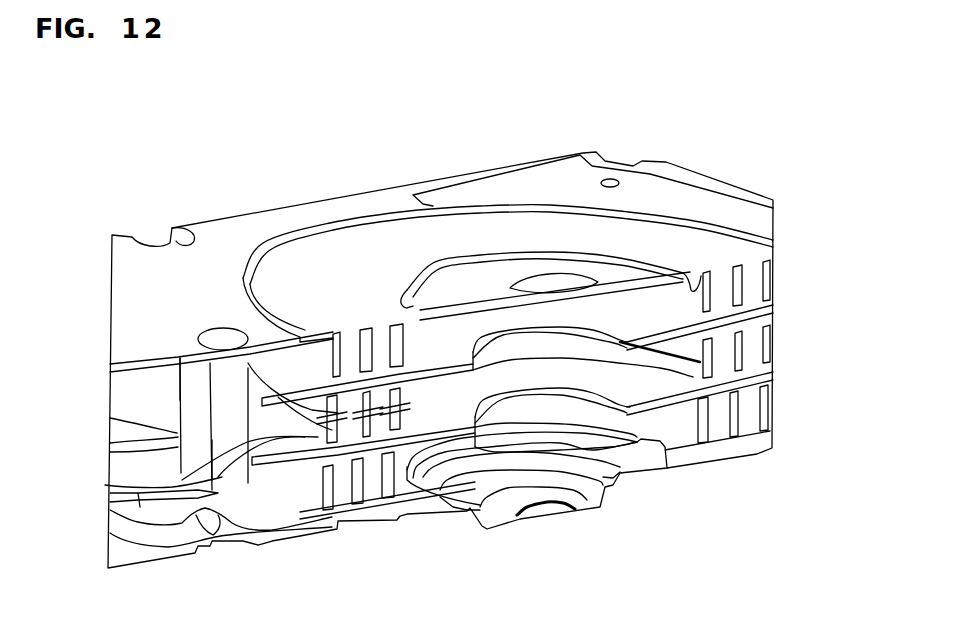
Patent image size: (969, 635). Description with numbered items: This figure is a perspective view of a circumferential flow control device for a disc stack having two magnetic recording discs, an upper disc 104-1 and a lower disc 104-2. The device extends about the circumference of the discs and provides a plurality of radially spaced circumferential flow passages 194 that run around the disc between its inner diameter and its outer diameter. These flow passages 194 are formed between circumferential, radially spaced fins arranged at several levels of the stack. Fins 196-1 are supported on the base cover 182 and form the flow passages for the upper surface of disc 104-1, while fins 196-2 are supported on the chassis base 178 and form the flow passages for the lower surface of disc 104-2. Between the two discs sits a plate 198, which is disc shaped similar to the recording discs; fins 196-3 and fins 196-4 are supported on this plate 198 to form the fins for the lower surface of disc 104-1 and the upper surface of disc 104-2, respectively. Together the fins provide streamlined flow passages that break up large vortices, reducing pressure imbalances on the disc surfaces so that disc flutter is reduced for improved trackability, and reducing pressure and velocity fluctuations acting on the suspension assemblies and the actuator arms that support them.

The base cover 182 is at (580, 226).
The circumferential flow passages 194 is at (752, 278).
The disc 104-1 is at (772, 295).
The disc 104-2 is at (757, 376).
The fins 196-1 is at (393, 349).
The fins 196-2 is at (397, 483).
The fins 196-3 is at (255, 385).
The fins 196-4 is at (300, 455).
The plate 198 is at (390, 424).
The chassis base 178 is at (631, 474).